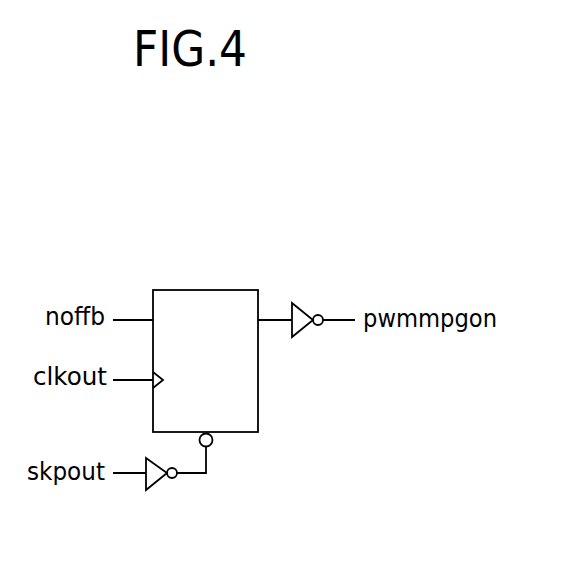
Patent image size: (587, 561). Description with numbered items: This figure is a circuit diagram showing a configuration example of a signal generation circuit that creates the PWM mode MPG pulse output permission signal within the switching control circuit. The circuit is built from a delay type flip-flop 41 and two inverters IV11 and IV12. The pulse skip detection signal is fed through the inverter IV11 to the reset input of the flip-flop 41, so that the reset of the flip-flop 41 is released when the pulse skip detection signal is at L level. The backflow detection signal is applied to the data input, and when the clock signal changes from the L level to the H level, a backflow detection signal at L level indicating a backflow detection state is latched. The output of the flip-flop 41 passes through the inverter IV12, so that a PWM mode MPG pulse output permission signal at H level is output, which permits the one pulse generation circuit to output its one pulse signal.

The delay type flip-flop 41 is at (193, 290).
The inverter IV11 is at (157, 488).
The inverter IV12 is at (304, 307).